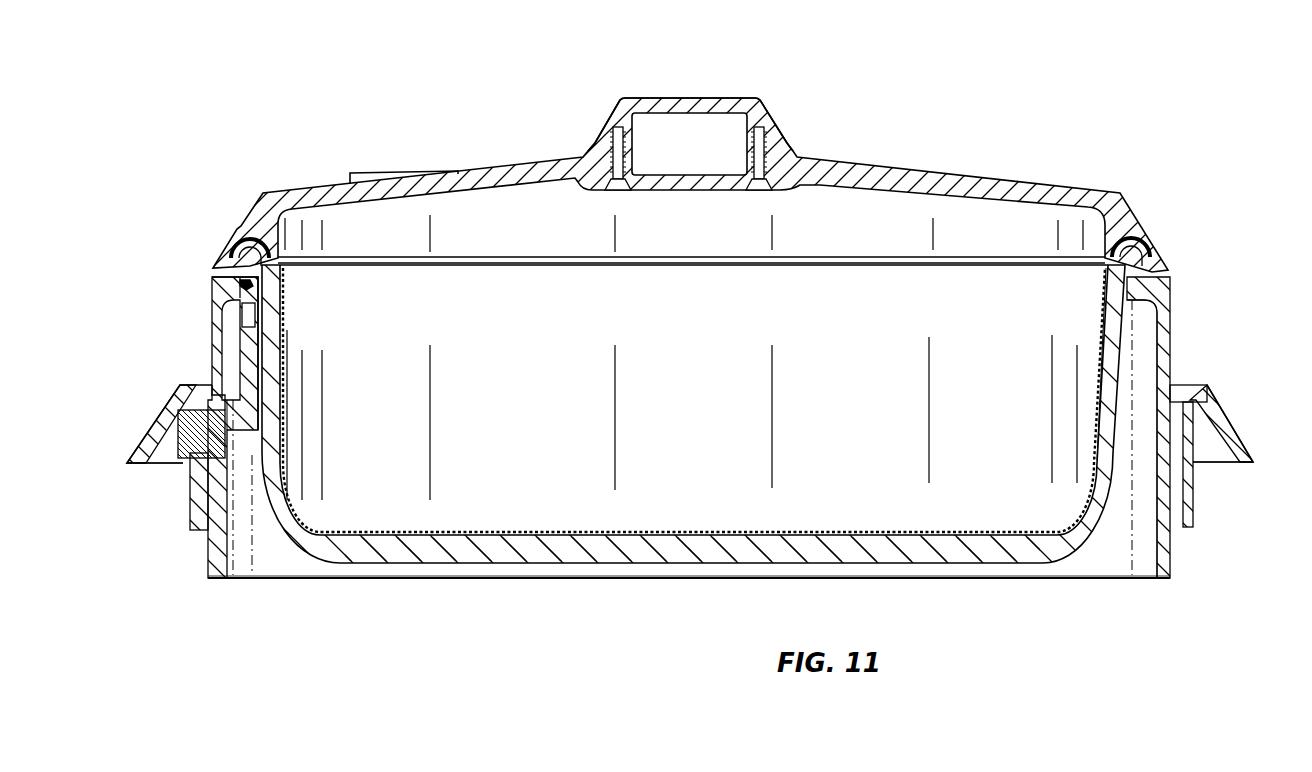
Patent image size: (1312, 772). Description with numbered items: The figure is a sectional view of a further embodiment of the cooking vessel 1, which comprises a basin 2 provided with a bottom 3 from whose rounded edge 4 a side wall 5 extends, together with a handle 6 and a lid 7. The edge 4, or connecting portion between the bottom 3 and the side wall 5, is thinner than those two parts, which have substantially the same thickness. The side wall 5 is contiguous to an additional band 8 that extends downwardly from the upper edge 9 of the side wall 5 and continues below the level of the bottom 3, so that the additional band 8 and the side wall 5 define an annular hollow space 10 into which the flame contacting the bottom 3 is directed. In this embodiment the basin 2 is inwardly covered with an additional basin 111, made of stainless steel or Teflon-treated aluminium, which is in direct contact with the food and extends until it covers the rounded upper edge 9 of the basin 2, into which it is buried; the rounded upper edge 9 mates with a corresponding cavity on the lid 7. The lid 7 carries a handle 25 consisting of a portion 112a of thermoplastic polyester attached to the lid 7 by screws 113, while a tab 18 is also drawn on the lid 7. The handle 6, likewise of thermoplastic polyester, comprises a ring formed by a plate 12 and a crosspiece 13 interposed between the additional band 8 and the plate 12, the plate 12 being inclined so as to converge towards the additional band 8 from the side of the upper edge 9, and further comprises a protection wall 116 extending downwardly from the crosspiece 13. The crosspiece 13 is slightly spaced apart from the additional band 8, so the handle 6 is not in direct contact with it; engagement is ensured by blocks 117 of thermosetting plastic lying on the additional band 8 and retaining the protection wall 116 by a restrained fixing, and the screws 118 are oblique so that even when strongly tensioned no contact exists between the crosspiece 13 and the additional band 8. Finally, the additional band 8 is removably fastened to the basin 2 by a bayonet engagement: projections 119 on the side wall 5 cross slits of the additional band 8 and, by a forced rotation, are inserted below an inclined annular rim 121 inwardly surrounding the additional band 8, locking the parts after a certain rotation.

The vessel 1 is at (183, 626).
The basin 2 is at (340, 555).
The bottom 3 is at (690, 548).
The edge 4 is at (1083, 537).
The side wall 5 is at (1112, 348).
The handle 6 is at (148, 412).
The lid 7 is at (921, 162).
The additional band 8 is at (1179, 329).
The upper edge 9 is at (262, 262).
The annular hollow space 10 is at (248, 432).
The plate 12 is at (178, 385).
The crosspiece 13 is at (198, 383).
The lid tab 18 is at (403, 164).
The handle 25 is at (690, 100).
The additional basin 111 is at (616, 531).
The portion 112a is at (640, 98).
The screws 113 is at (617, 188).
The protection wall 116 is at (195, 497).
The blocks 117 is at (187, 458).
The screws 118 is at (228, 407).
The projections 119 is at (243, 313).
The annular rim 121 is at (228, 275).